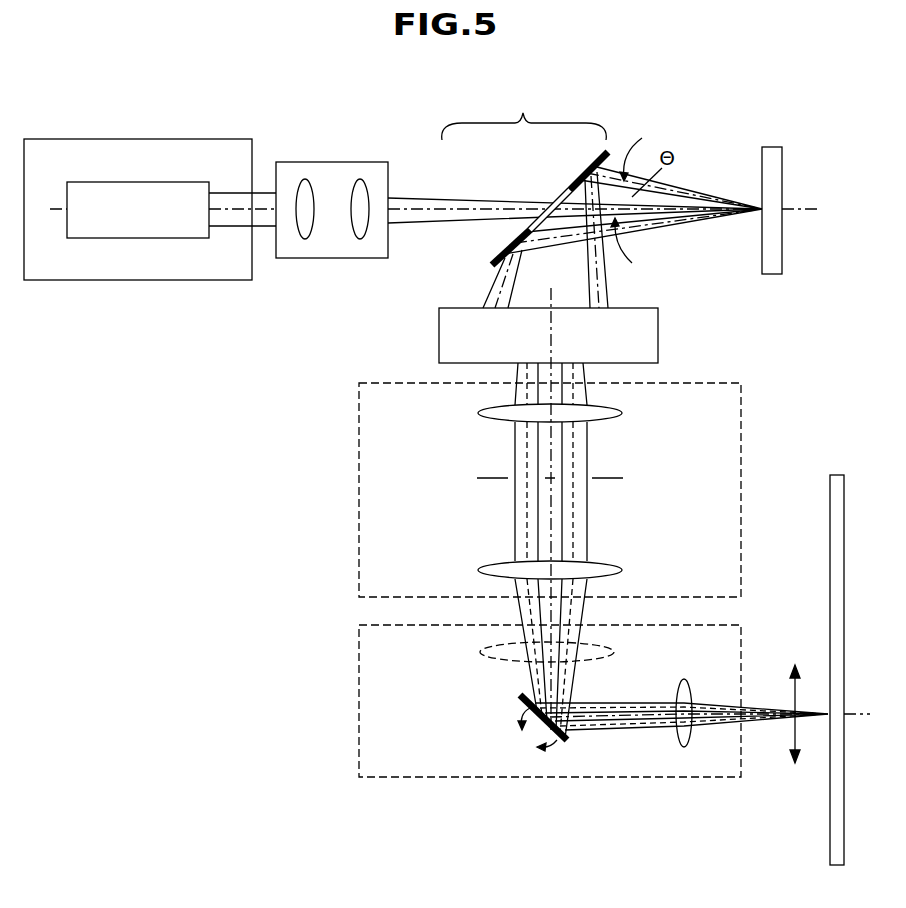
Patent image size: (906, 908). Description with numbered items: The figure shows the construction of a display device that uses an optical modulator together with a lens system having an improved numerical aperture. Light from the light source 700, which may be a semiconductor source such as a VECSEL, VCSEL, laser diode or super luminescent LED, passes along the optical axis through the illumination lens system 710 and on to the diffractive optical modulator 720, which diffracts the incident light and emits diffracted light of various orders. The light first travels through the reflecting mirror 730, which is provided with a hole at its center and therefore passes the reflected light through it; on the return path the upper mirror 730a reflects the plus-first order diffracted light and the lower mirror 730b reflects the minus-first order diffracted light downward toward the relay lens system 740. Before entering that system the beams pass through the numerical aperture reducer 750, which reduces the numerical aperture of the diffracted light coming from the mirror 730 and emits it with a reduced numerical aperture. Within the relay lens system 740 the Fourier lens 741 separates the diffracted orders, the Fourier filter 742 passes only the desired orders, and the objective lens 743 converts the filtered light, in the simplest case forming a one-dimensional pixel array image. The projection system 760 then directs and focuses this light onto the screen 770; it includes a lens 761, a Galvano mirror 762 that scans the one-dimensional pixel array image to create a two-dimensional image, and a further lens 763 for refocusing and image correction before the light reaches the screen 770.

The light source 700 is at (146, 187).
The illumination lens system 710 is at (337, 165).
The diffractive optical modulator 720 is at (771, 152).
The reflecting mirror 730 is at (525, 177).
The upper mirror 730a is at (583, 168).
The lower mirror 730b is at (513, 243).
The relay lens system 740 is at (366, 407).
The Fourier lens 741 is at (622, 411).
The Fourier filter 742 is at (620, 479).
The objective lens 743 is at (622, 569).
The numerical aperture reducer 750 is at (660, 333).
The projection system 760 is at (366, 654).
The lens 761 is at (622, 651).
The Galvano mirror 762 is at (527, 726).
The lens 763 is at (684, 735).
The screen 770 is at (826, 478).